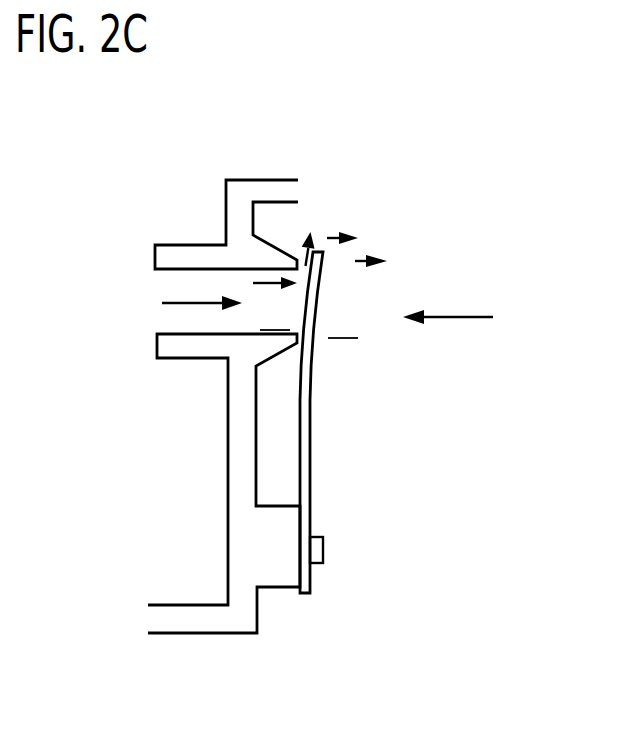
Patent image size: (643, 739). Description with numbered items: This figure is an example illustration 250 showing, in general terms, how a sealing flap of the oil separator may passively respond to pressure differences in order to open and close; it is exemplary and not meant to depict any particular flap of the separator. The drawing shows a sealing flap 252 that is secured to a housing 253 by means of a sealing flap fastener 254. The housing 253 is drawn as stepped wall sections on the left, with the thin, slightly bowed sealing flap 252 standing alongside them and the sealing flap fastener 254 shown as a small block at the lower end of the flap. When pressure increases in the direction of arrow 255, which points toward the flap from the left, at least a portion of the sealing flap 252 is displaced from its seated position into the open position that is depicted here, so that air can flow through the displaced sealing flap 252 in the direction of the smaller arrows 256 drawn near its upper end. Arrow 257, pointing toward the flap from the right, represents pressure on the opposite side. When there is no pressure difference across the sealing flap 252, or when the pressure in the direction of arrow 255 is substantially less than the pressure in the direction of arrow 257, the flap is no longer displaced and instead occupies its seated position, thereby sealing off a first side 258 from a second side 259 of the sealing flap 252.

The example illustration 250 is at (557, 59).
The sealing flap 252 is at (315, 312).
The housing 253 is at (167, 257).
The sealing flap fastener 254 is at (316, 550).
The arrow 255 is at (177, 302).
The smaller arrows 256 is at (344, 233).
The arrow 257 is at (457, 315).
The first side 258 is at (275, 304).
The second side 259 is at (330, 286).